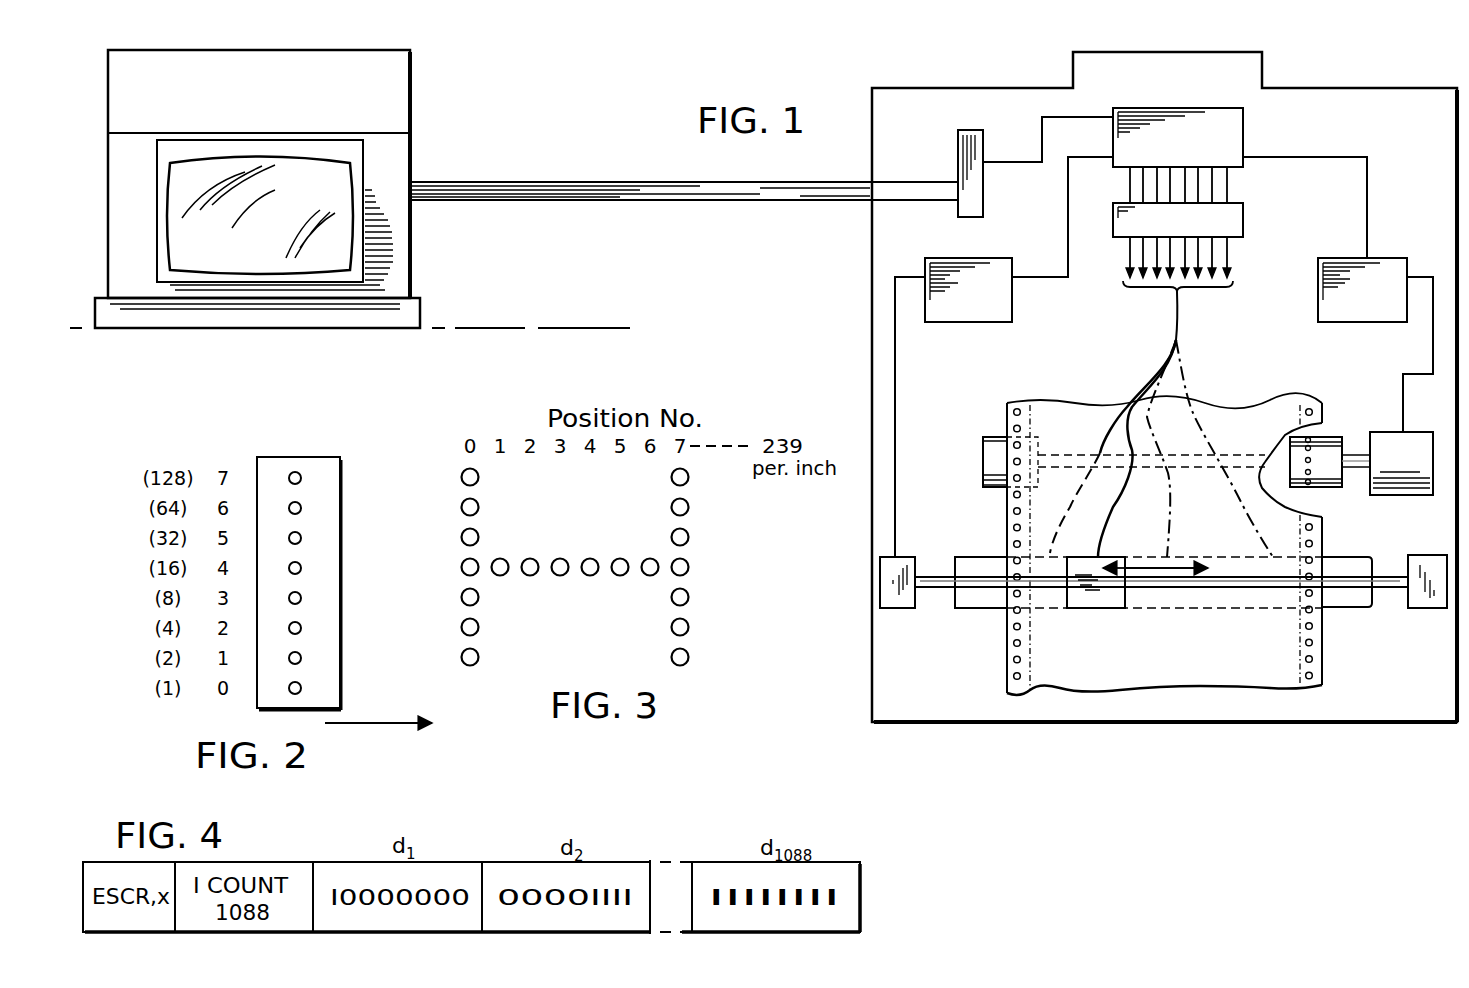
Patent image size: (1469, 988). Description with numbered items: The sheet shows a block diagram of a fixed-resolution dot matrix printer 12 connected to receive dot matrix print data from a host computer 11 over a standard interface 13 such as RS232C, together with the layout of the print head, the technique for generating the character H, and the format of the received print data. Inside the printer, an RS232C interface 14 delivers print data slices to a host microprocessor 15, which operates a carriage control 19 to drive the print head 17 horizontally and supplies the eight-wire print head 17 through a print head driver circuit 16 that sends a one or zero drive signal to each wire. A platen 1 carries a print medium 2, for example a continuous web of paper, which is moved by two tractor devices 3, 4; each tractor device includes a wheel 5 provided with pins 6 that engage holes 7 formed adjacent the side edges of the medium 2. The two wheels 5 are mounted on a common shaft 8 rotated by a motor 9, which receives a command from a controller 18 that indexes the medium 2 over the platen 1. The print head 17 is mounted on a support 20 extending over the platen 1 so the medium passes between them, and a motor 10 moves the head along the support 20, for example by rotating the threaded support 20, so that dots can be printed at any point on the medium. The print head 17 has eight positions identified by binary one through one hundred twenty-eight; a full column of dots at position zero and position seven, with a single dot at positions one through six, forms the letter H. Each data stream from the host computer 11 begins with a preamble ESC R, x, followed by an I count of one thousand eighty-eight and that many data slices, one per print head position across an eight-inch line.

In FIG. 1, the platen 1 is at (1347, 600).
In FIG. 1, the print medium 2 is at (1322, 673).
In FIG. 1, the tractor device 3 is at (1342, 414).
In FIG. 1, the tractor device 4 is at (994, 418).
In FIG. 1, the wheel 5 is at (985, 450).
In FIG. 1, the pins 6 is at (1311, 462).
In FIG. 1, the holes 7 is at (1013, 512).
In FIG. 1, the common shaft 8 is at (1355, 455).
In FIG. 1, the motor 9 is at (1403, 495).
In FIG. 1, the motor 10 is at (895, 608).
In FIG. 1, the host computer 11 is at (412, 93).
In FIG. 1, the dot matrix printer 12 is at (972, 88).
In FIG. 1, the interface 13 is at (537, 182).
In FIG. 1, the RS232C interface 14 is at (958, 162).
In FIG. 1, the host microprocessor 15 is at (1243, 130).
In FIG. 1, the print head driver circuit 16 is at (1243, 226).
In FIG. 1, the print head 17 is at (1112, 610).
In FIG. 2, the print head 17 is at (302, 455).
In FIG. 1, the controller 18 is at (1385, 258).
In FIG. 1, the carriage control 19 is at (948, 258).
In FIG. 1, the support 20 is at (1388, 588).